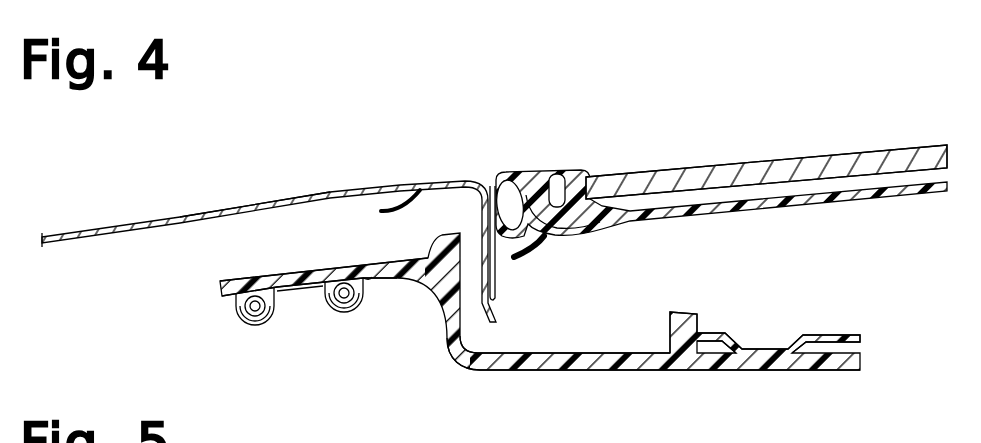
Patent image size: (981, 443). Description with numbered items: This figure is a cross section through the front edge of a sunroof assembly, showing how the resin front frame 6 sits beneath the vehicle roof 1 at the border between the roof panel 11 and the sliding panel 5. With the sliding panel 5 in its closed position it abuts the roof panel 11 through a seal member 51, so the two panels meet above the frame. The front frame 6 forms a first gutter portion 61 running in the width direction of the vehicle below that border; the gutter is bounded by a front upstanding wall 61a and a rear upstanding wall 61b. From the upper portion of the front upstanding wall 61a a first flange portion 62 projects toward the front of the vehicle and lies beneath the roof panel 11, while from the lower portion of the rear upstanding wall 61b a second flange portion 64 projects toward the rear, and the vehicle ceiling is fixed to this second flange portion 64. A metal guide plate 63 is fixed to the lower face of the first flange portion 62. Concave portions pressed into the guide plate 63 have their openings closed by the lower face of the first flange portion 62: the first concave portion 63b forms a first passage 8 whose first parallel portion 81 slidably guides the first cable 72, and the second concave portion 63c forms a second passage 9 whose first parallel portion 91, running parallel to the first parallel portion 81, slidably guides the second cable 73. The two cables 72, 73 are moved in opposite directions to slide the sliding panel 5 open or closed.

The vehicle roof 1 is at (102, 222).
The roof panel 11 is at (220, 208).
The sliding panel 5 is at (798, 165).
The seal member 51 is at (538, 174).
The front frame 6 is at (678, 304).
The first gutter portion 61 is at (624, 353).
The front upstanding wall 61a is at (470, 363).
The rear upstanding wall 61b is at (683, 320).
The first flange portion 62 is at (315, 277).
The guide plate 63 is at (228, 310).
The first concave portion 63b is at (353, 313).
The second concave portion 63c is at (252, 322).
The second flange portion 64 is at (758, 360).
The first cable 72 is at (340, 313).
The second cable 73 is at (247, 318).
The first passage 8 is at (368, 309).
The first parallel portion 81 is at (367, 293).
The second passage 9 is at (270, 326).
The first parallel portion 91 is at (280, 302).